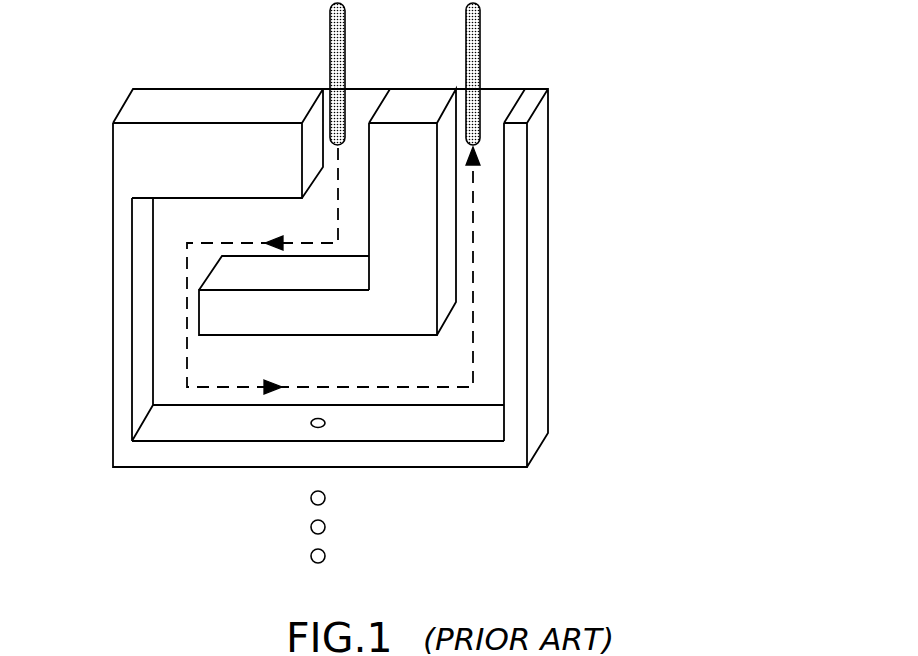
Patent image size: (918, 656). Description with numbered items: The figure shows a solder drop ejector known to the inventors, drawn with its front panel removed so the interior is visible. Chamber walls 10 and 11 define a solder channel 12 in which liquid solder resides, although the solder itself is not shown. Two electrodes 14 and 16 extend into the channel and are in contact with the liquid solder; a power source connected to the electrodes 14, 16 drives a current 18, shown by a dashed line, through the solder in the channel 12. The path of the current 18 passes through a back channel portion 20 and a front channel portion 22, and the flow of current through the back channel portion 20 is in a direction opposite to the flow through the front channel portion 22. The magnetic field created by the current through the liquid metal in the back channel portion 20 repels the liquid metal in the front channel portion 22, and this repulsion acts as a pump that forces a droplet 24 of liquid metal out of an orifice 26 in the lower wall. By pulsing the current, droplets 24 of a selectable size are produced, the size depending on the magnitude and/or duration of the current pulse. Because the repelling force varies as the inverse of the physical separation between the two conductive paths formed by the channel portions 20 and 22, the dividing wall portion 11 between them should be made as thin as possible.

The chamber wall 10 is at (516, 327).
The chamber wall 11 is at (208, 313).
The solder channel 12 is at (366, 97).
The electrode 14 is at (332, 62).
The electrode 16 is at (466, 62).
The current 18 is at (187, 297).
The back channel portion 20 is at (178, 212).
The front channel portion 22 is at (408, 365).
The droplet 24 is at (325, 553).
The orifice 26 is at (325, 423).